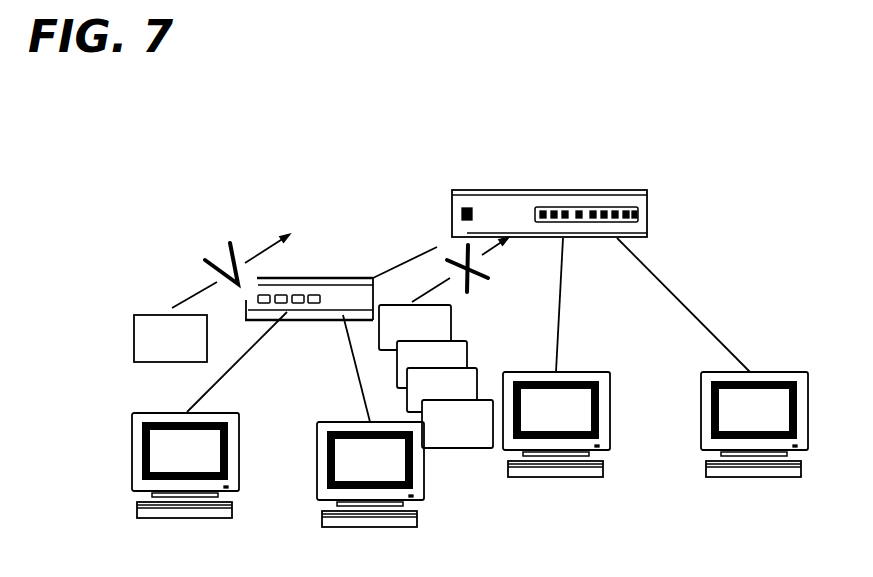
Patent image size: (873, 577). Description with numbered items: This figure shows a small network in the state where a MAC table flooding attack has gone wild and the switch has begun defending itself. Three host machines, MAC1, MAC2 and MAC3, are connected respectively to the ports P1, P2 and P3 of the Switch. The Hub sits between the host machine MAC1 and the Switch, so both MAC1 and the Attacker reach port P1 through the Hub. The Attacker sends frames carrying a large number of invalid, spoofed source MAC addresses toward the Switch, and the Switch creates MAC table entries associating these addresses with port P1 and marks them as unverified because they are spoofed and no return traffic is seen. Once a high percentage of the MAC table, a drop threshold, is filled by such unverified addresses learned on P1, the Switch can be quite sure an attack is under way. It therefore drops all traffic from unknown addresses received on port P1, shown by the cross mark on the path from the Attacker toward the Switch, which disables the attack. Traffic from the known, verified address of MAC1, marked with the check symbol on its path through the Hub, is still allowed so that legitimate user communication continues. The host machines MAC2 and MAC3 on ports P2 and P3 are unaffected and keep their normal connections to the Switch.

The hub Hub is at (309, 280).
The switch Switch is at (549, 194).
The port P1 is at (441, 257).
The port P2 is at (578, 305).
The port P3 is at (683, 300).
The host machine MAC1 is at (185, 481).
The host machine MAC2 is at (556, 439).
The host machine MAC3 is at (754, 439).
The attacker Attacker is at (370, 489).